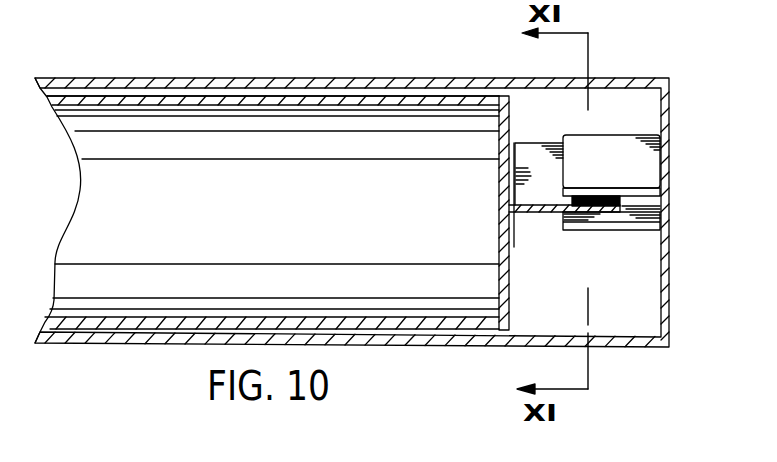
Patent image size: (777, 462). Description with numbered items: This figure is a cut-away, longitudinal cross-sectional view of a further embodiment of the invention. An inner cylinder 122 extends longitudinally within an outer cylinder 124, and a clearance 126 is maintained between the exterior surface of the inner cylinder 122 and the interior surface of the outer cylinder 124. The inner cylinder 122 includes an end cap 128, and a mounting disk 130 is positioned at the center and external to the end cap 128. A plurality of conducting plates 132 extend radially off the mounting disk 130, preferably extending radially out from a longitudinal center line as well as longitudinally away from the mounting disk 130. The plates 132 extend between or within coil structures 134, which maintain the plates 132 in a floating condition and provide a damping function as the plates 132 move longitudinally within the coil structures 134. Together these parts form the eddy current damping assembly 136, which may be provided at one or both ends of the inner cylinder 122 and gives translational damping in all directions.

The inner cylinder 122 is at (153, 97).
The outer cylinder 124 is at (218, 77).
The clearance 126 is at (318, 92).
The end cap 128 is at (497, 255).
The mounting disk 130 is at (519, 182).
The conducting plates 132 is at (548, 143).
The coil structures 134 is at (668, 230).
The eddy current damping assembly 136 is at (537, 308).